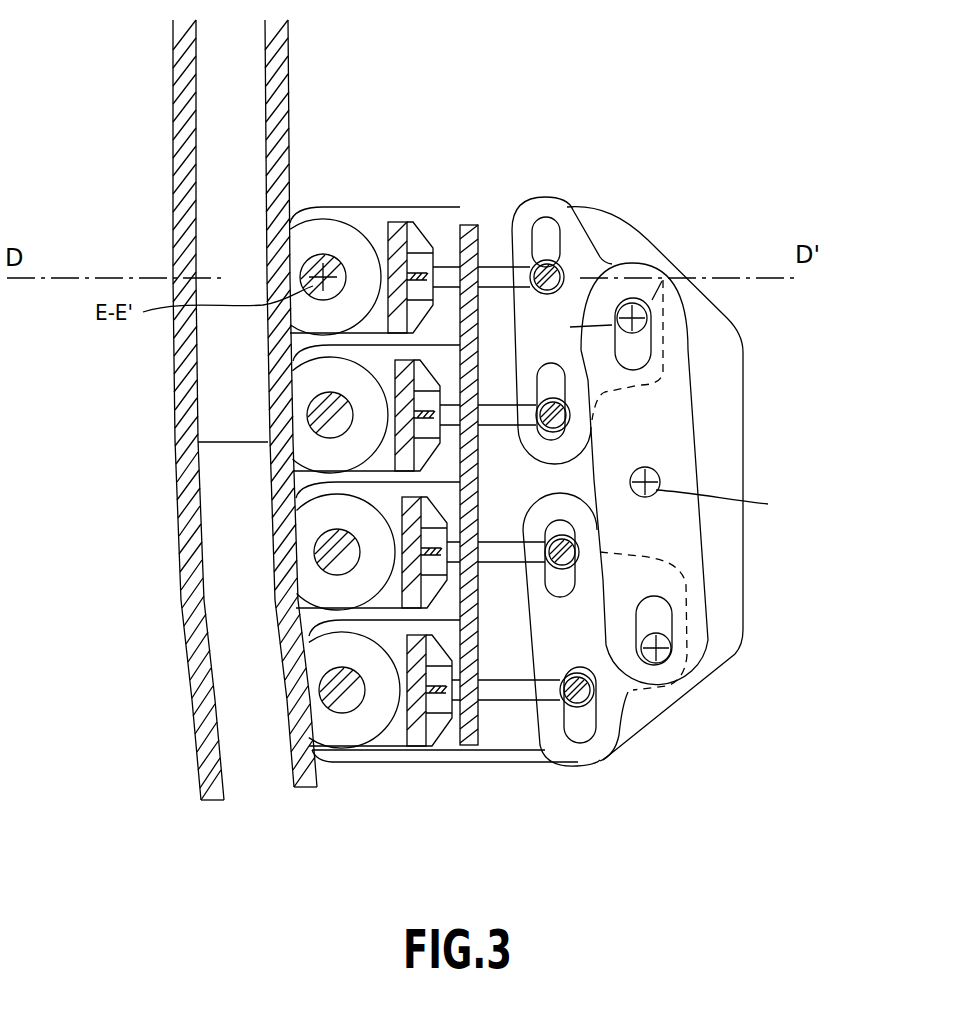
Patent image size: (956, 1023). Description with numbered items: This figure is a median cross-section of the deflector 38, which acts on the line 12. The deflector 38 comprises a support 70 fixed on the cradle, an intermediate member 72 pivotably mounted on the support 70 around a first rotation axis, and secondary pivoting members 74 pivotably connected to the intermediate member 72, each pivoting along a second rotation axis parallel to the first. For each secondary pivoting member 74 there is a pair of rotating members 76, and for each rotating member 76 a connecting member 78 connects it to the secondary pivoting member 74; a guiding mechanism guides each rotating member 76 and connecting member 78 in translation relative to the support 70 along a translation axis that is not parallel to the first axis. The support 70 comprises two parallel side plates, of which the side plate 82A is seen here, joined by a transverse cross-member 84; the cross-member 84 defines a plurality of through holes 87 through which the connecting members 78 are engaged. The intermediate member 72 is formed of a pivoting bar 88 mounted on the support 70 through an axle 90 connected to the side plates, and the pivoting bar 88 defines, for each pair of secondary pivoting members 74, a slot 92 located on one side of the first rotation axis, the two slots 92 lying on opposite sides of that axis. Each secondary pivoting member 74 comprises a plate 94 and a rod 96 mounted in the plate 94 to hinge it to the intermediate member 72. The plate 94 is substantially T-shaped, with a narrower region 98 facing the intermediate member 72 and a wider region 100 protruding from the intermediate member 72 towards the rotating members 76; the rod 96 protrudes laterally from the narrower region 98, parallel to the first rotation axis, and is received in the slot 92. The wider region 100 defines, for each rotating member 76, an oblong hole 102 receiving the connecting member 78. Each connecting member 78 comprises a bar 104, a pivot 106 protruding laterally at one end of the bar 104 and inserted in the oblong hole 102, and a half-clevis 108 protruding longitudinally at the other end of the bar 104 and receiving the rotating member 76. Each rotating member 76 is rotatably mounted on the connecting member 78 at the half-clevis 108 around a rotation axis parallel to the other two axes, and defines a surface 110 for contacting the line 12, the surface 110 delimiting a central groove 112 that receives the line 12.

The line 12 is at (220, 82).
The deflector 38 is at (686, 447).
The support 70 is at (332, 500).
The intermediate member 72 is at (697, 452).
The secondary pivoting member 74 is at (659, 484).
The rotating member 76 is at (384, 240).
The connecting member 78 is at (418, 205).
The side plate 82A is at (475, 460).
The transverse cross-member 84 is at (466, 224).
The through hole 87 is at (478, 300).
The pivoting bar 88 is at (660, 283).
The axle 90 is at (662, 478).
The slot 92 is at (657, 332).
The plate 94 is at (600, 257).
The rod 96 is at (664, 372).
The narrower region 98 is at (672, 290).
The wider region 100 is at (580, 420).
The oblong hole 102 is at (568, 228).
The bar 104 is at (495, 270).
The pivot 106 is at (546, 232).
The half-clevis 108 is at (382, 222).
The surface 110 is at (293, 447).
The central groove 112 is at (310, 414).